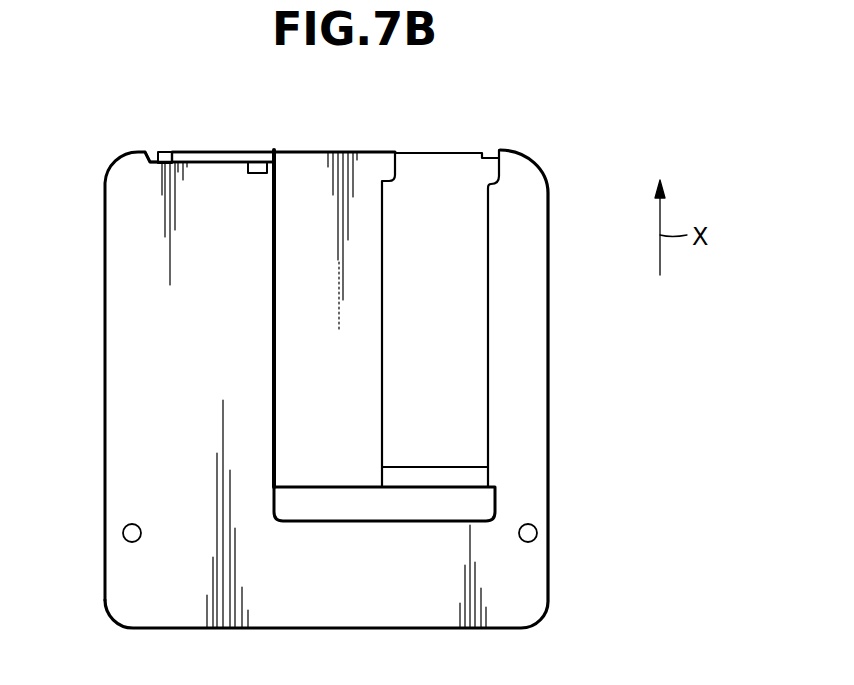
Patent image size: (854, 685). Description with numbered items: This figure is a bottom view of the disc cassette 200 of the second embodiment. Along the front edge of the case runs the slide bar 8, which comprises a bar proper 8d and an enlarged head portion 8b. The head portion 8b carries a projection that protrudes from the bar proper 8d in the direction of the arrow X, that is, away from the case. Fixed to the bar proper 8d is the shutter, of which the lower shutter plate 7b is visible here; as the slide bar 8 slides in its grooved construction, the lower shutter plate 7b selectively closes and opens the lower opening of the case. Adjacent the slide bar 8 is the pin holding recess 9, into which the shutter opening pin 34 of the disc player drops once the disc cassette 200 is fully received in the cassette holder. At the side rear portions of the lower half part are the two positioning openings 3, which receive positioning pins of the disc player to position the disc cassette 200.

The disc cassette 200 is at (552, 401).
The lower shutter plate 7b is at (291, 378).
The slide bar 8 is at (247, 153).
The head portion 8b is at (165, 152).
The bar proper 8d is at (214, 157).
The pin holding recess 9 is at (256, 176).
The shutter opening pin 34 is at (150, 160).
The positioning opening 3 is at (123, 535).